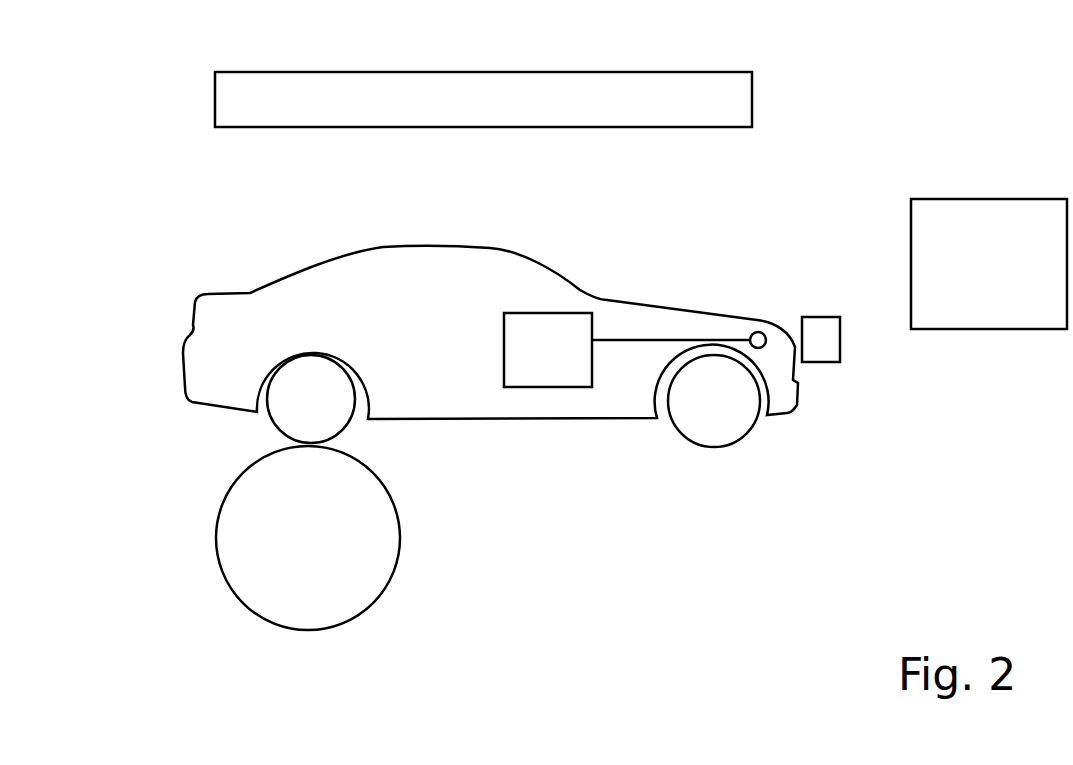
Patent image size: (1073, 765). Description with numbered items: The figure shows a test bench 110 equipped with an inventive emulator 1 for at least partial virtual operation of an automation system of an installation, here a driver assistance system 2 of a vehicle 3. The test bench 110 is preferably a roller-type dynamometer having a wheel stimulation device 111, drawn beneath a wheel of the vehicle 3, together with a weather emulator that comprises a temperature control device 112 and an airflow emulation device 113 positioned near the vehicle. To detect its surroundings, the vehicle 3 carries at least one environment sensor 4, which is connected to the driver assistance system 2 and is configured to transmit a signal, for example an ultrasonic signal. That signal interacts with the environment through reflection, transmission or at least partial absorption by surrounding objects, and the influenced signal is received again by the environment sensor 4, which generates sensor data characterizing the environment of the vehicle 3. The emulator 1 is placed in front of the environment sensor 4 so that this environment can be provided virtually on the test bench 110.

The test bench 110 is at (113, 107).
The wheel stimulation device 111 is at (218, 515).
The temperature control device 112 is at (353, 127).
The airflow emulation device 113 is at (990, 198).
The emulator 1 is at (840, 362).
The driver assistance system 2 is at (557, 387).
The vehicle 3 is at (547, 268).
The environment sensor 4 is at (758, 331).